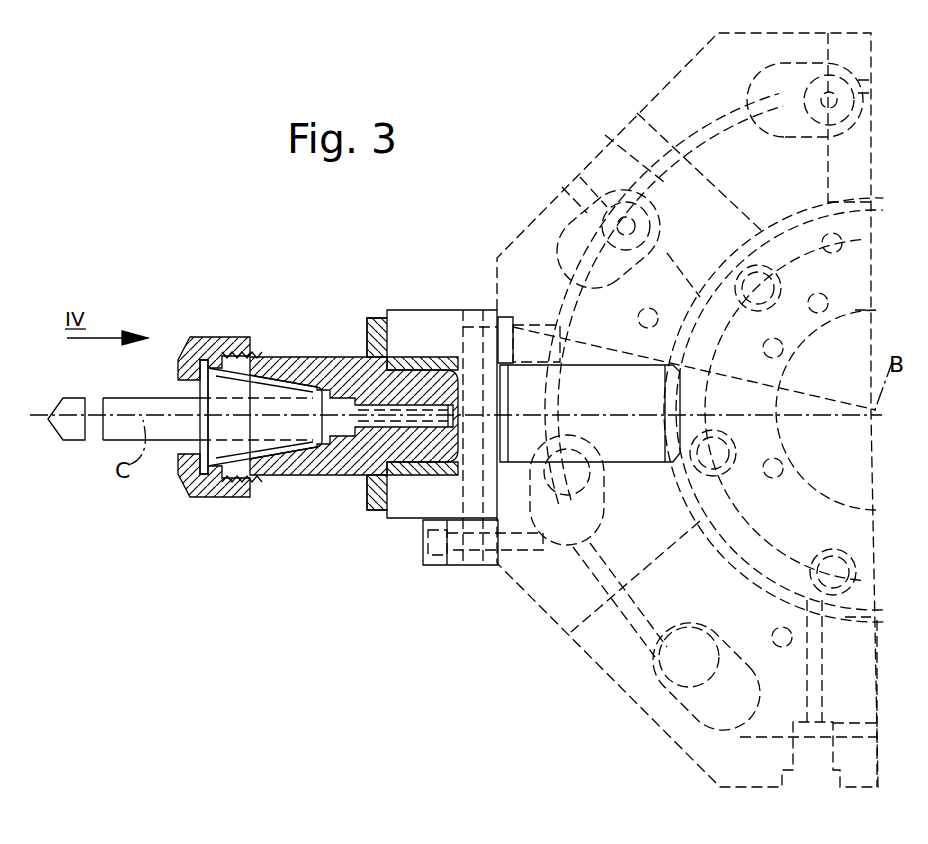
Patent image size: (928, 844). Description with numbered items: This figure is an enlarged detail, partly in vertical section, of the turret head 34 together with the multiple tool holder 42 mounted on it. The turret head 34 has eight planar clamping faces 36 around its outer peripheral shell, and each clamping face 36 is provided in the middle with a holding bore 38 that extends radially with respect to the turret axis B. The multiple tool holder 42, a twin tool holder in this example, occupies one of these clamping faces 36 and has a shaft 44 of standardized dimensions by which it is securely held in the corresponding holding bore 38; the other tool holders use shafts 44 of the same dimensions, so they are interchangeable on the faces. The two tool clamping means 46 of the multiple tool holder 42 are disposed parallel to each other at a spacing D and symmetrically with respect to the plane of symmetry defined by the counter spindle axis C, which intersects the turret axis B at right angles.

The turret head 34 is at (555, 190).
The clamping face 36 is at (686, 67).
The holding bore 38 is at (637, 113).
The multiple tool holder 42 is at (427, 328).
The shaft 44 is at (633, 443).
The tool clamping means 46 is at (307, 360).